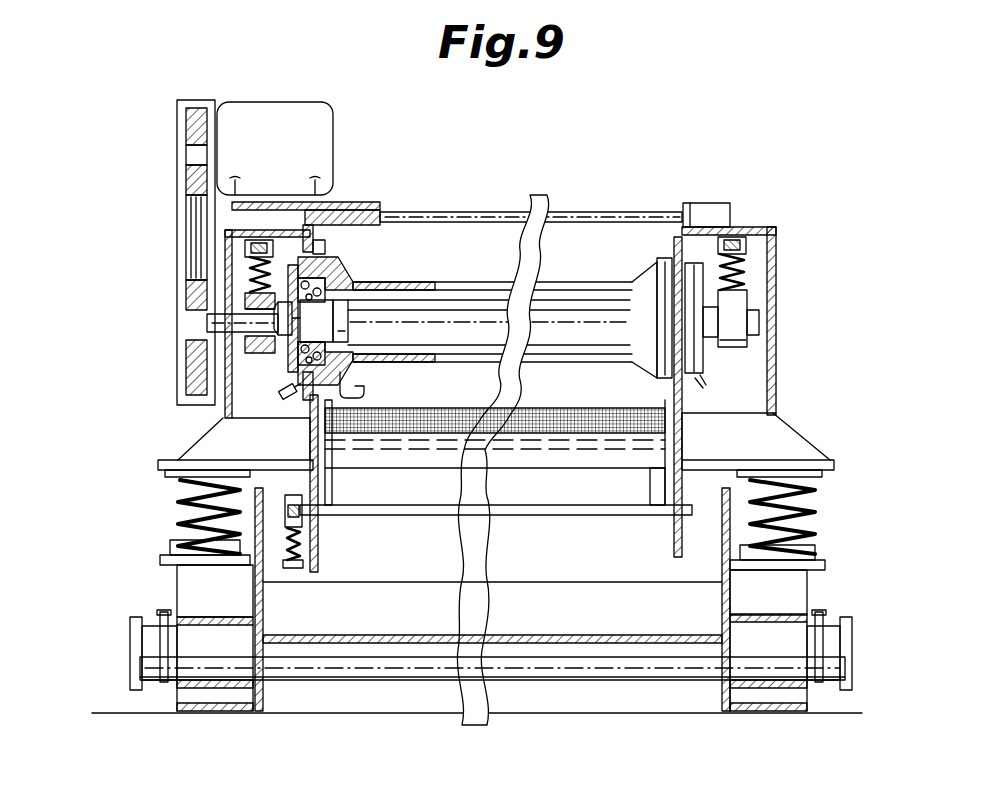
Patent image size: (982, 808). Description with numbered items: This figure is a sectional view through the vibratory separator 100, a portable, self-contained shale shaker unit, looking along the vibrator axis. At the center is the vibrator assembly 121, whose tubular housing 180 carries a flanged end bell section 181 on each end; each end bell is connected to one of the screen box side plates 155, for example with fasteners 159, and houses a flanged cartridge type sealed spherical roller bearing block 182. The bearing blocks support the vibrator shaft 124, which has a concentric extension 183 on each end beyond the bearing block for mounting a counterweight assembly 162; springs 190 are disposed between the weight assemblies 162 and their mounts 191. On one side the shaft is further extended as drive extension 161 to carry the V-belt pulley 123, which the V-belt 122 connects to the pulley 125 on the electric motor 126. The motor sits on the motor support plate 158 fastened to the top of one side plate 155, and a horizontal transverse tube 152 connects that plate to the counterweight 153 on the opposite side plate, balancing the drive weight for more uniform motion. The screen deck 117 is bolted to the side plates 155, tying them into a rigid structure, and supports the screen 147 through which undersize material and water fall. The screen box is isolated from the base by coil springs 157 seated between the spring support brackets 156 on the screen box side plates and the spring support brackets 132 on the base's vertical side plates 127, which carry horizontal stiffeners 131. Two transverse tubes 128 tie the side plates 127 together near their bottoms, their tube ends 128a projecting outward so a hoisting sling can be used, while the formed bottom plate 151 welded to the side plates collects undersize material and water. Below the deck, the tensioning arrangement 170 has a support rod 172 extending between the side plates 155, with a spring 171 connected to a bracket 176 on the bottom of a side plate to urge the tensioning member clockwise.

The vibratory separator 100 is at (168, 363).
The screen deck 117 is at (535, 456).
The vibrator assembly 121 is at (352, 268).
The V-belt 122 is at (195, 213).
The pulley 123 is at (190, 300).
The vibrator shaft 124 is at (385, 320).
The pulley 125 is at (197, 142).
The electric motor 126 is at (303, 138).
The vertical side plate 127 is at (540, 637).
The transverse tube 128 is at (385, 662).
The tube end 128a is at (130, 648).
The horizontal stiffener 131 is at (215, 595).
The spring support bracket 132 is at (240, 560).
The screen 147 is at (525, 412).
The bottom plate 151 is at (530, 620).
The horizontal transverse tube 152 is at (583, 212).
The counterweight 153 is at (720, 208).
The side plate 155 is at (310, 450).
The spring support bracket 156 is at (200, 440).
The coil spring 157 is at (190, 500).
The motor support plate 158 is at (345, 202).
The fastener 159 is at (318, 236).
The drive extension 161 is at (185, 325).
The counterweight assembly 162 is at (250, 345).
The tensioning arrangement 170 is at (327, 535).
The spring 171 is at (280, 565).
The support rod 172 is at (582, 512).
The bracket 176 is at (300, 545).
The tubular housing 180 is at (505, 285).
The flanged end bell section 181 is at (638, 272).
The bearing block 182 is at (305, 240).
The concentric extension 183 is at (752, 315).
The spring 190 is at (258, 300).
The mount 191 is at (250, 250).